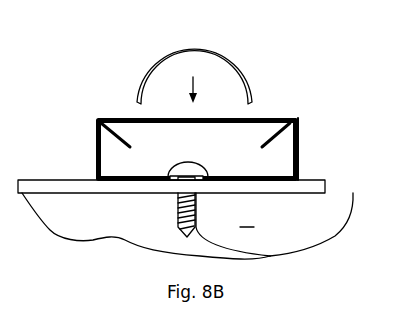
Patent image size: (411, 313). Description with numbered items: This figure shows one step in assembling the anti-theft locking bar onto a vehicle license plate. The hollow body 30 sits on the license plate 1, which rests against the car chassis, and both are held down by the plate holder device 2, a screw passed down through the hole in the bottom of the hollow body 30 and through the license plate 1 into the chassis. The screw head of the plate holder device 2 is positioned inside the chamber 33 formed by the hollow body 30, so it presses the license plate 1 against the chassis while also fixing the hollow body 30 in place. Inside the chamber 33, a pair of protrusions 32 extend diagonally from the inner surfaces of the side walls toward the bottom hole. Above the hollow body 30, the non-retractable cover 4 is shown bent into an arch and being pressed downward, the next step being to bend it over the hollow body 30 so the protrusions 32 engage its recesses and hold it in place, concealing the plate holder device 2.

The license plate 1 is at (312, 180).
The plate holder device 2 is at (270, 256).
The non-retractable cover 4 is at (227, 65).
The hollow body 30 is at (96, 138).
The protrusion 32 is at (298, 117).
The chamber 33 is at (189, 150).